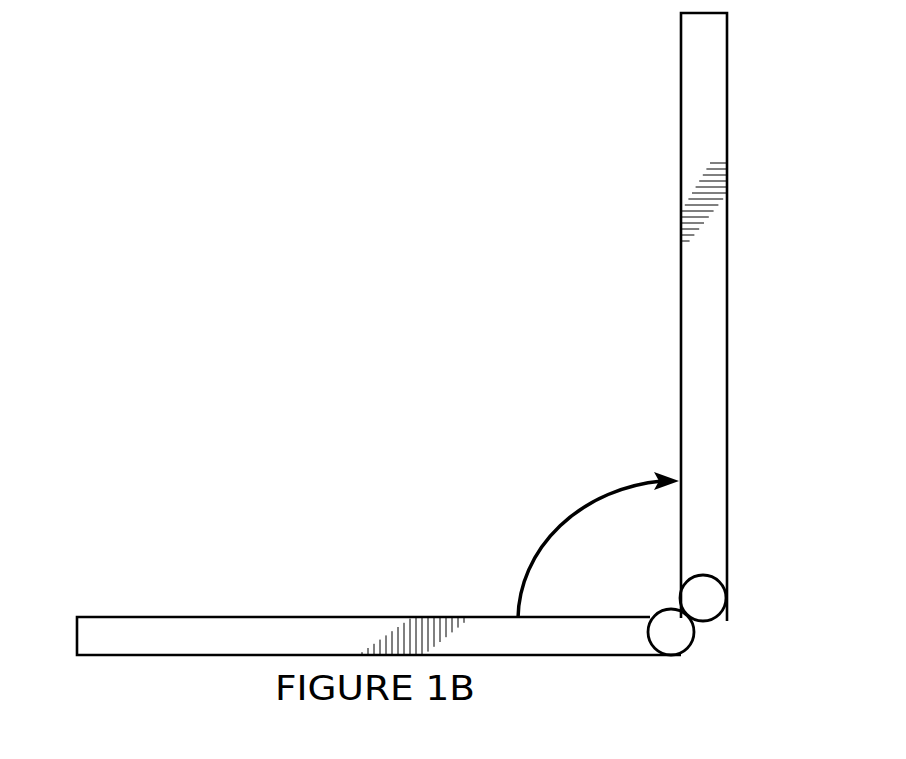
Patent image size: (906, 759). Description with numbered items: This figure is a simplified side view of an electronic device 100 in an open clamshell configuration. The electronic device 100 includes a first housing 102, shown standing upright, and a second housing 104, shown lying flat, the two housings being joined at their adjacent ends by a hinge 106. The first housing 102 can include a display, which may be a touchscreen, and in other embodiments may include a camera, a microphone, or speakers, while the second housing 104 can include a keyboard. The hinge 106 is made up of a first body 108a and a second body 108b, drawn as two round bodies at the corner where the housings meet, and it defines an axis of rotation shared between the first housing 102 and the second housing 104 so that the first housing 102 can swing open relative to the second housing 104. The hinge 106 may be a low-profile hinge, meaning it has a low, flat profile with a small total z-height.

The electronic device 100 is at (321, 326).
The first housing 102 is at (688, 302).
The second housing 104 is at (87, 639).
The hinge 106 is at (648, 561).
The first body 108a is at (718, 598).
The second body 108b is at (687, 633).